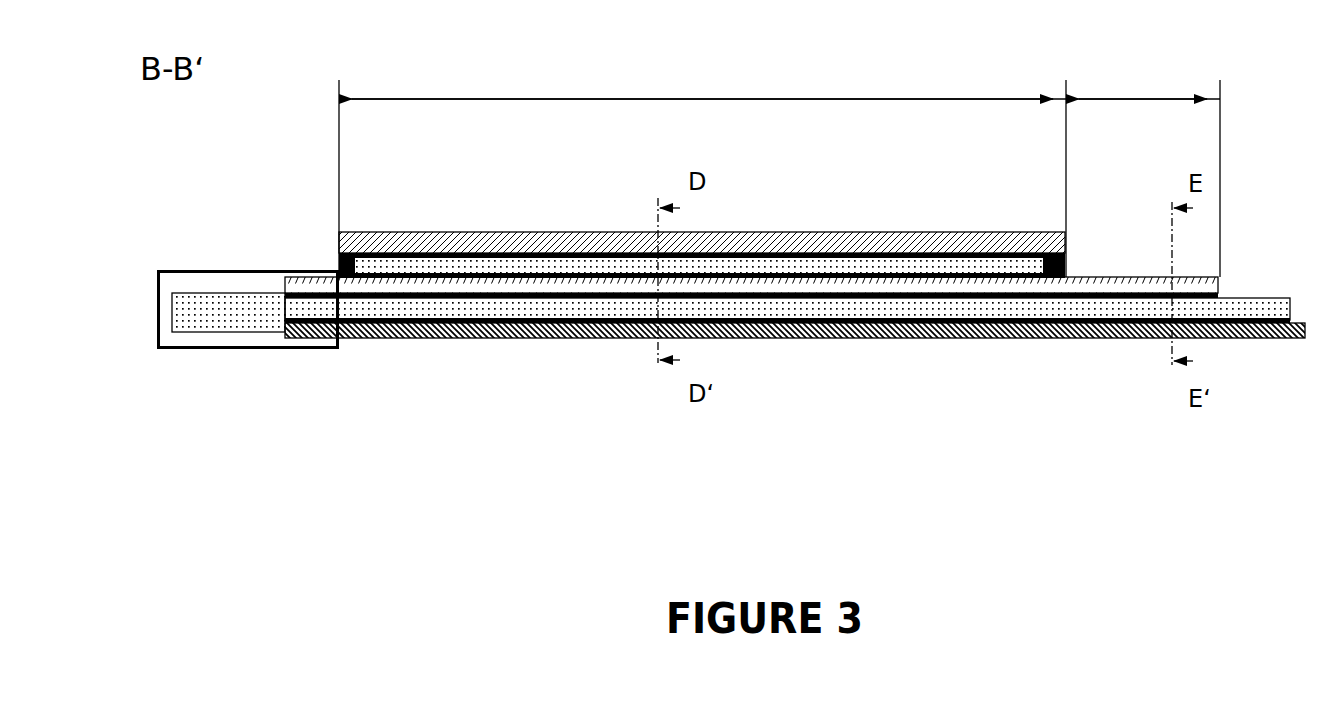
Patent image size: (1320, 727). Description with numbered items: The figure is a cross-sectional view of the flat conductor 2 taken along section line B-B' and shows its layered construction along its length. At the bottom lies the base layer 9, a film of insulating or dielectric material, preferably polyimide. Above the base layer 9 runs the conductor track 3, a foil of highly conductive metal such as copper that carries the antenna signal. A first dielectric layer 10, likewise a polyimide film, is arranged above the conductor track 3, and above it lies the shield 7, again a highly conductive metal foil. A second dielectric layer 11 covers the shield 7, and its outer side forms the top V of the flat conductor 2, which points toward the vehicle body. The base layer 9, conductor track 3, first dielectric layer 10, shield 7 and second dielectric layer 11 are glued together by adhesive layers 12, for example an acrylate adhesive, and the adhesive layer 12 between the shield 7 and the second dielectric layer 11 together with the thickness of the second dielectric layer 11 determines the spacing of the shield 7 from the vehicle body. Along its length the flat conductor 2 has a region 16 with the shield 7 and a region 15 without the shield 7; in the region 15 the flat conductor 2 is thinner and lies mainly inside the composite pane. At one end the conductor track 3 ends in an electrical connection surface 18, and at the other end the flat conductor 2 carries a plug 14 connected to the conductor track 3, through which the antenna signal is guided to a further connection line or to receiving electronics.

The flat conductor 2 is at (202, 250).
The conductor track 3 is at (956, 312).
The shield 7 is at (798, 266).
The base layer 9 is at (448, 332).
The first dielectric layer 10 is at (1118, 287).
The second dielectric layer 11 is at (727, 243).
The adhesive layers 12 is at (500, 253).
The plug 14 is at (196, 350).
The region without the shield 15 is at (1143, 171).
The region with the shield 16 is at (702, 172).
The electrical connection surface 18 is at (1250, 300).
The top of the flat conductor V is at (995, 228).